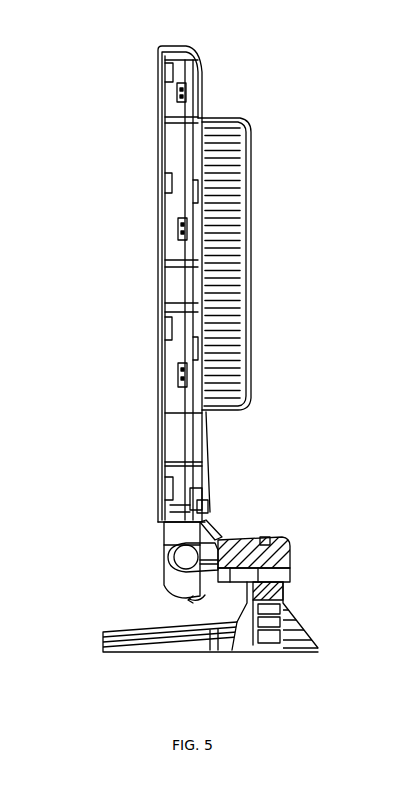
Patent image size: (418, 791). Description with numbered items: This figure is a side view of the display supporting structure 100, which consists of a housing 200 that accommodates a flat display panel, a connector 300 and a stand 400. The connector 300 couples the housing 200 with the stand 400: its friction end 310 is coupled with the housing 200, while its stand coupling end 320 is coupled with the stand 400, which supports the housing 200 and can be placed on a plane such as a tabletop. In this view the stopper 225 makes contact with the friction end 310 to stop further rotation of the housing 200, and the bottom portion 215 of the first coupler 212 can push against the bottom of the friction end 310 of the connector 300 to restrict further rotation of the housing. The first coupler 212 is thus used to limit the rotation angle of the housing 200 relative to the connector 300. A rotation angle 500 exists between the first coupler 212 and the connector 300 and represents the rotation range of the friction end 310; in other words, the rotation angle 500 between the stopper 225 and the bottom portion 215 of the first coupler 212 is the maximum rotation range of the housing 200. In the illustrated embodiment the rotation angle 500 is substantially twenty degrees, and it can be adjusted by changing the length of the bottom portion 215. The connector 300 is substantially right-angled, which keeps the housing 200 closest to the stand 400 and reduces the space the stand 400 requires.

The display supporting structure 100 is at (338, 112).
The housing 200 is at (143, 182).
The first coupler 212 is at (170, 532).
The bottom portion 215 is at (166, 590).
The stopper 225 is at (212, 522).
The connector 300 is at (368, 524).
The friction end 310 is at (283, 538).
The stand coupling end 320 is at (292, 576).
The stand 400 is at (303, 638).
The rotation angle 500 is at (207, 603).